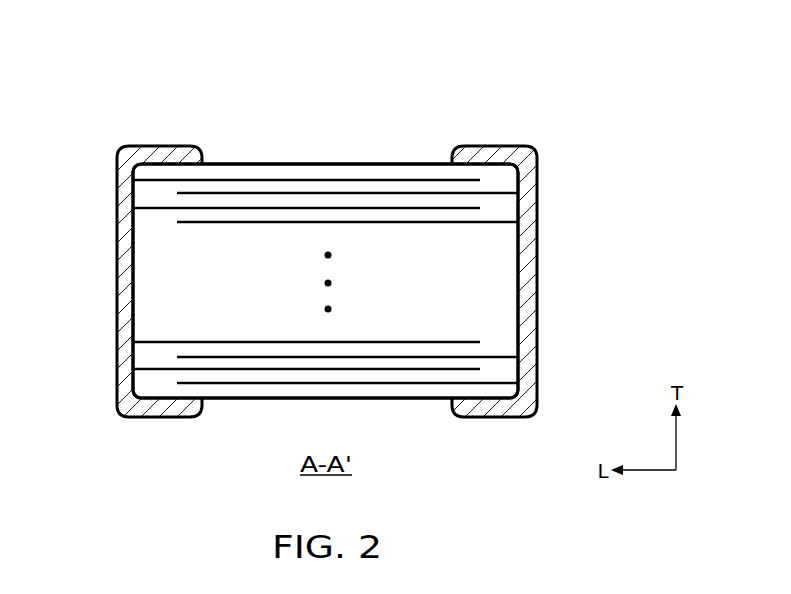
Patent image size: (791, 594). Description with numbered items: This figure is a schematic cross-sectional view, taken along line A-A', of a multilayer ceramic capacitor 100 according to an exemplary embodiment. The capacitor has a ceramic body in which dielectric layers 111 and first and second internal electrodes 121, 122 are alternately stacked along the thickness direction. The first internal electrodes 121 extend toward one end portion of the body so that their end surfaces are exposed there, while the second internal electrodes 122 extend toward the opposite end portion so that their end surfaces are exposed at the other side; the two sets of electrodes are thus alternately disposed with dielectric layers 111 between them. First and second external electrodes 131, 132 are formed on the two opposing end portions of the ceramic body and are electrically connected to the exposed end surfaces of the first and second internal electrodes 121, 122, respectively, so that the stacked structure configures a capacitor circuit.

The multilayer ceramic capacitor 100 is at (358, 52).
The dielectric layers 111 is at (508, 210).
The first internal electrode 121 is at (160, 209).
The second internal electrode 122 is at (493, 223).
The first external electrode 131 is at (158, 152).
The second external electrode 132 is at (488, 153).